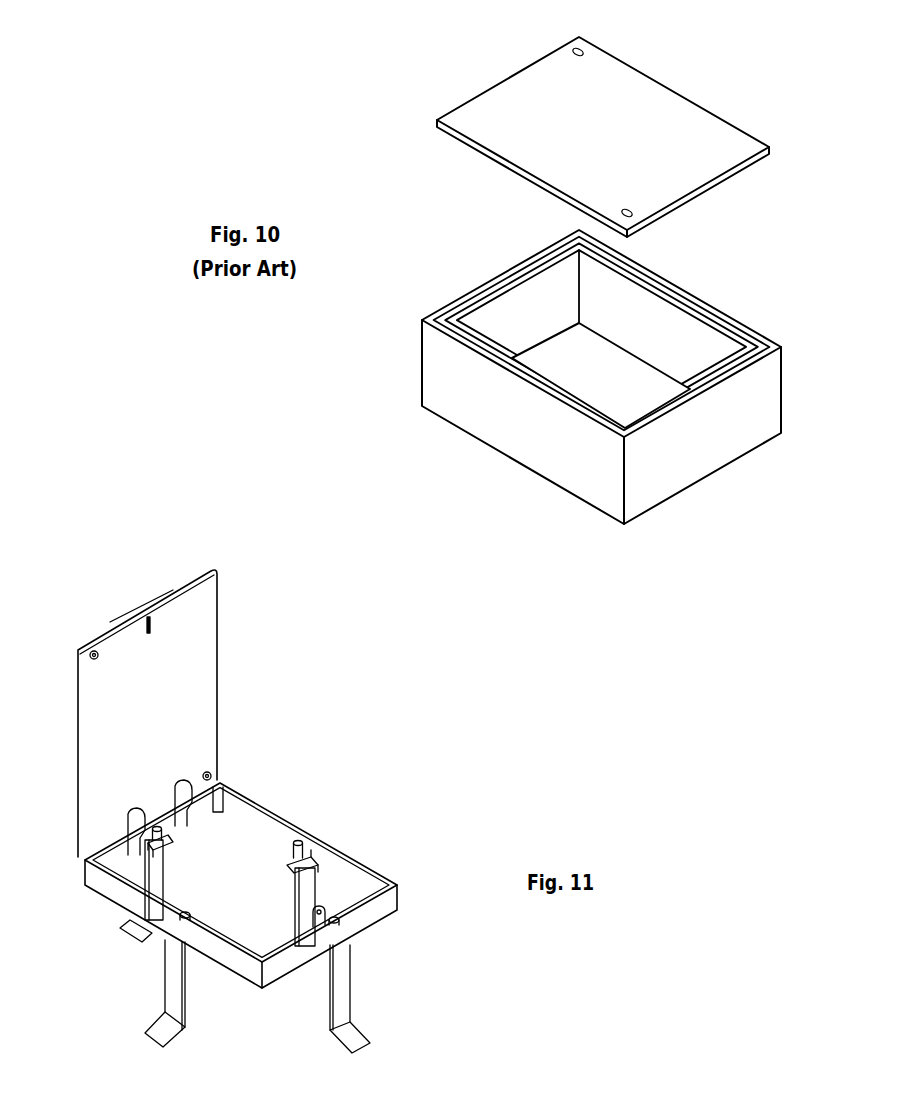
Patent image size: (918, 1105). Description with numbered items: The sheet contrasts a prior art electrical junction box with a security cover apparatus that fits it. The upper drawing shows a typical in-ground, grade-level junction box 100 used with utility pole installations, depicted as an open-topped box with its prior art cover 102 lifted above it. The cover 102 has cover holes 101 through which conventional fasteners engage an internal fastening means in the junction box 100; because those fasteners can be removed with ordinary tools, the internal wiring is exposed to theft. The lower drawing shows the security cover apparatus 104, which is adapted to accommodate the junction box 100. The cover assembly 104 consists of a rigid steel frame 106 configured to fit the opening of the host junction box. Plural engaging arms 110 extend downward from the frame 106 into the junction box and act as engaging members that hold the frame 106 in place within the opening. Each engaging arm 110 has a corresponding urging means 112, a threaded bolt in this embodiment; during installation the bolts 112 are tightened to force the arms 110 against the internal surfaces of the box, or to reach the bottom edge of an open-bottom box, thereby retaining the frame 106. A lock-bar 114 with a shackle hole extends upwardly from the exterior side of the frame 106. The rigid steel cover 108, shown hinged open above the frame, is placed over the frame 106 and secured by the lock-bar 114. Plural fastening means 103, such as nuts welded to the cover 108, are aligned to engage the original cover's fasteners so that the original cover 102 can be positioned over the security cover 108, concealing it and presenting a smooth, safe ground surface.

In FIG. 10, the junction box 100 is at (447, 421).
In FIG. 10, the cover holes 101 is at (574, 50).
In FIG. 10, the cover 102 is at (457, 105).
In FIG. 11, the fastening means 103 is at (84, 651).
In FIG. 11, the security cover apparatus 104 is at (346, 760).
In FIG. 11, the frame 106 is at (368, 866).
In FIG. 11, the cover 108 is at (219, 657).
In FIG. 11, the engaging arms 110 is at (294, 893).
In FIG. 11, the urging means 112 is at (290, 845).
In FIG. 11, the lock-bar 114 is at (313, 911).